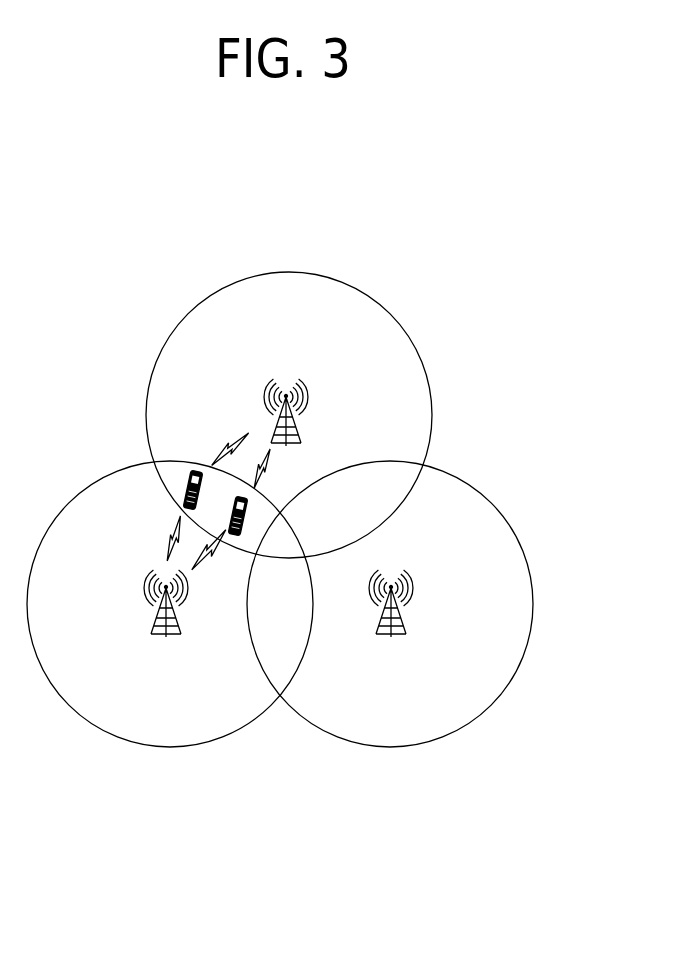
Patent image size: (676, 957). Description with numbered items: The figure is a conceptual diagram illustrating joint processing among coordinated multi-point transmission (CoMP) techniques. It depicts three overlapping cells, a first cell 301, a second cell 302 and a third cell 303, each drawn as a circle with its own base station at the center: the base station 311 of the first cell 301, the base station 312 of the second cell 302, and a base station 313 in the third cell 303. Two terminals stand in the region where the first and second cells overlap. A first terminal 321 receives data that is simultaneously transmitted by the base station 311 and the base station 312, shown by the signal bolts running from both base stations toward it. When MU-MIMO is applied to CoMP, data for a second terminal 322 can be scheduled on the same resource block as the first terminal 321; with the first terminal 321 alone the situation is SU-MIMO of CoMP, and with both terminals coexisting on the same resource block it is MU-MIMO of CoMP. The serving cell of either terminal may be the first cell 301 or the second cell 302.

The first cell 301 is at (347, 300).
The second cell 302 is at (110, 722).
The cell coverage area of third base station 303 is at (467, 713).
The base station 311 is at (293, 417).
The base station 312 is at (160, 617).
The third base station 313 is at (398, 608).
The first terminal 321 is at (188, 473).
The second terminal 322 is at (243, 500).